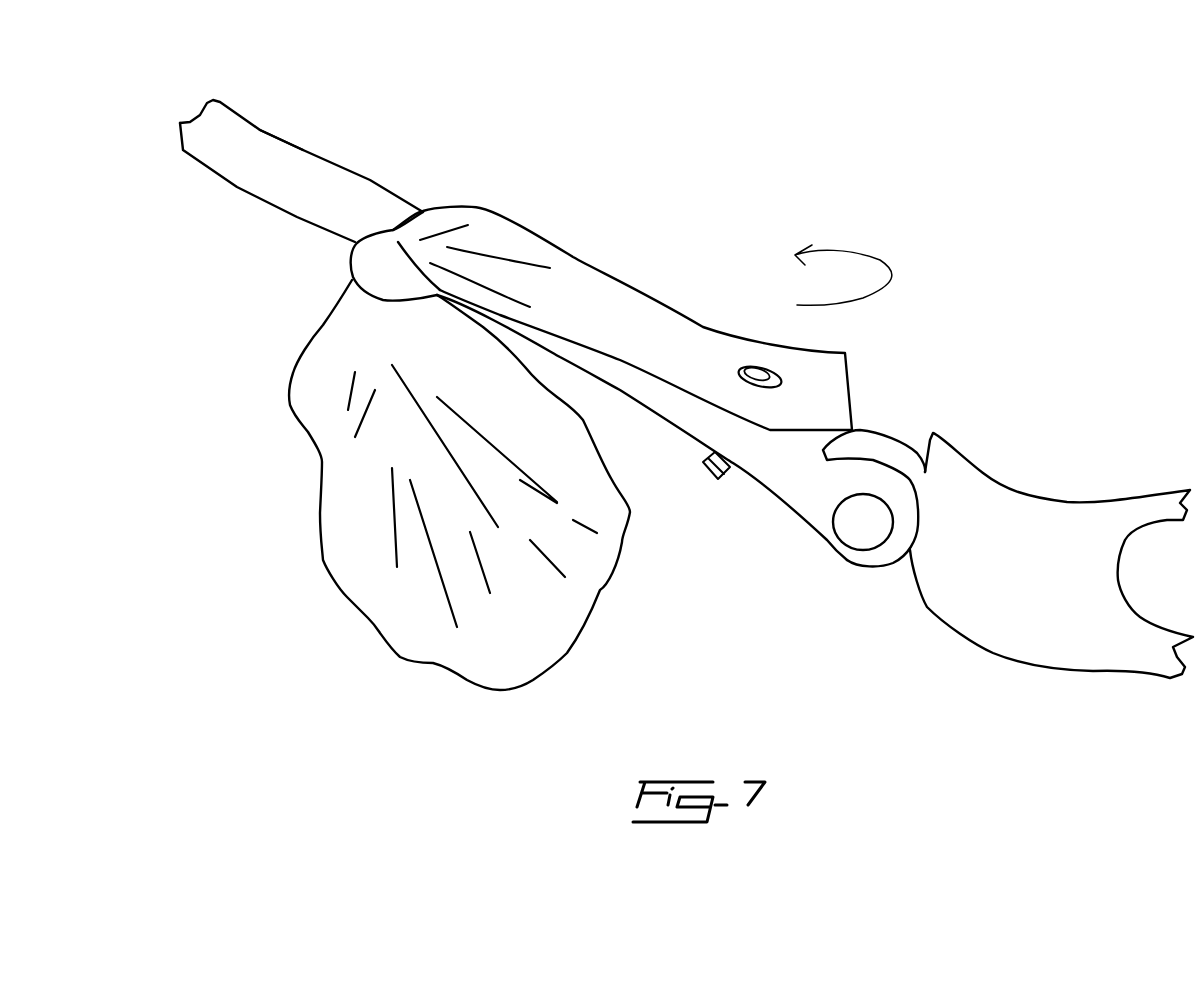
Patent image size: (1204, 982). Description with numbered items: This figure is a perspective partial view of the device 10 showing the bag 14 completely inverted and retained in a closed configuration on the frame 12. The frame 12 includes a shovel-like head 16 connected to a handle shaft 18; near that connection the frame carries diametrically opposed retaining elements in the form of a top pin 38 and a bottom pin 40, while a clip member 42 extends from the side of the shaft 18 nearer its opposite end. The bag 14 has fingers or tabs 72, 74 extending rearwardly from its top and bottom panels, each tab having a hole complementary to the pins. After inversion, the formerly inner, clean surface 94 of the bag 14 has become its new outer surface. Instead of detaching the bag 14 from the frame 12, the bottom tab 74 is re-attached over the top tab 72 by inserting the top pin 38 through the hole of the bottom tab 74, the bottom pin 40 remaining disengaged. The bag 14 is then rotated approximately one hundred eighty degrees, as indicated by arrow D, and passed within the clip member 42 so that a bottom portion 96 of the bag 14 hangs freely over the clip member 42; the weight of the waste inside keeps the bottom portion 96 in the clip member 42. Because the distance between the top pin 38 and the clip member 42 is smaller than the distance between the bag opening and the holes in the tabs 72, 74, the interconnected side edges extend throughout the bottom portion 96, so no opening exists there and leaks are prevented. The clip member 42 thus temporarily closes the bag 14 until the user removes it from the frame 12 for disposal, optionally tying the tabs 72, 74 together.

The device 10 is at (990, 181).
The frame 12 is at (318, 129).
The bag 14 is at (297, 441).
The head 16 is at (1113, 518).
The handle shaft 18 is at (242, 133).
The top pin 38 is at (772, 365).
The bottom pin 40 is at (723, 480).
The clip member 42 is at (393, 250).
The top tab 72 is at (622, 308).
The bottom tab 74 is at (658, 323).
The inner clean surface 94 is at (336, 526).
The bottom portion 96 is at (540, 617).